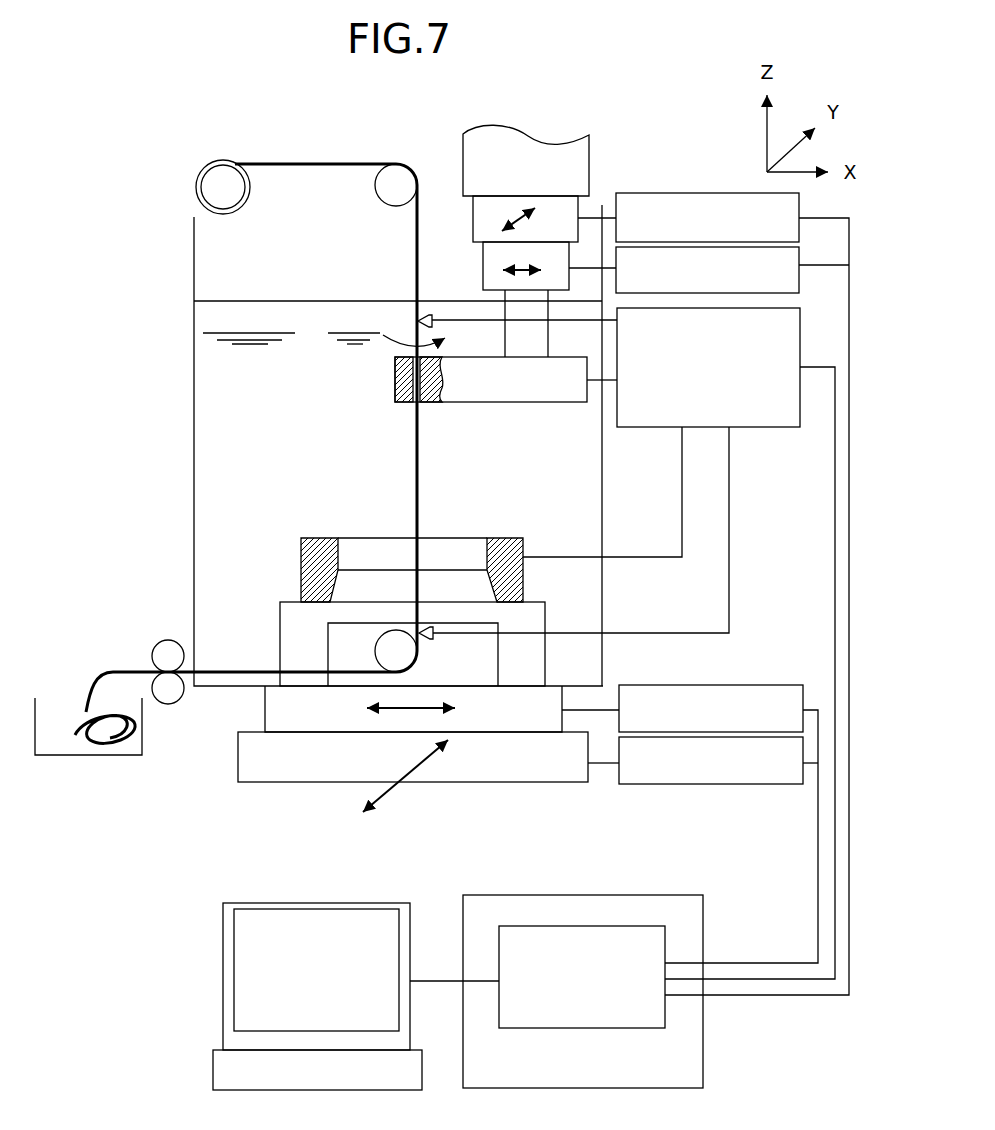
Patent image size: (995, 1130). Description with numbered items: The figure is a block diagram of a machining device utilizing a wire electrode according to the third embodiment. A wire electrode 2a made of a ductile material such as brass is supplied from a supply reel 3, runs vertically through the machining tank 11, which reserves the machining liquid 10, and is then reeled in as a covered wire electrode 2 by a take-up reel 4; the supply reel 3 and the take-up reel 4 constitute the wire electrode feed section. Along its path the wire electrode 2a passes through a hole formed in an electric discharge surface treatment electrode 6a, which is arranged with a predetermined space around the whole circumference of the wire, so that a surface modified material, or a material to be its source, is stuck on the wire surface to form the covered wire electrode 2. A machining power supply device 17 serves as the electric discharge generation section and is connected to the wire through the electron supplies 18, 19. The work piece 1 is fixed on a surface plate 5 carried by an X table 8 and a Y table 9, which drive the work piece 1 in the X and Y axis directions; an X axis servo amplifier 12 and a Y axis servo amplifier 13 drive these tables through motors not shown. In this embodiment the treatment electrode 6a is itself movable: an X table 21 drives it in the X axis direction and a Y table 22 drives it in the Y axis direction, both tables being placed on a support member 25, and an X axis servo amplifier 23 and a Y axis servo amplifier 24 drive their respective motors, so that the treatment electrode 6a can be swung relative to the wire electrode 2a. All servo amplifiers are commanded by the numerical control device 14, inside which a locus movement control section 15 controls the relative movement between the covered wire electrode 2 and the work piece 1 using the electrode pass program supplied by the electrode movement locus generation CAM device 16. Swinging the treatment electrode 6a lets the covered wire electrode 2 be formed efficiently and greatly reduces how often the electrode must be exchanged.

The work piece 1 is at (301, 552).
The covered wire electrode 2 is at (417, 503).
The wire electrode 2a is at (290, 164).
The supply reel 3 is at (213, 177).
The take-up reel 4 is at (163, 650).
The surface plate 5 is at (290, 632).
The electric discharge surface treatment electrode 6a is at (533, 395).
The X table 8 is at (265, 703).
The Y table 9 is at (243, 750).
The machining liquid 10 is at (302, 317).
The machining tank 11 is at (193, 425).
The X axis servo amplifier 12 is at (770, 685).
The Y axis servo amplifier 13 is at (648, 784).
The numerical control device 14 is at (693, 1034).
The locus movement control section 15 is at (528, 938).
The electrode movement locus generation CAM device 16 is at (243, 912).
The machining power supply device 17 is at (797, 352).
The electron supply 18 is at (427, 313).
The electron supply 19 is at (428, 640).
The X table 21 is at (483, 273).
The Y table 22 is at (473, 228).
The X axis servo amplifier 23 is at (792, 280).
The Y axis servo amplifier 24 is at (792, 228).
The support member 25 is at (573, 137).